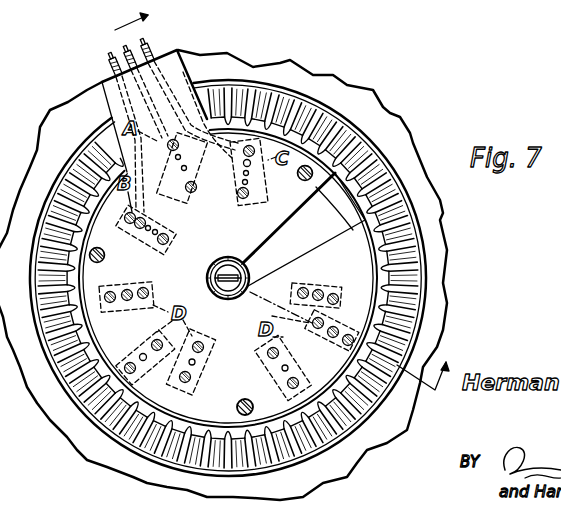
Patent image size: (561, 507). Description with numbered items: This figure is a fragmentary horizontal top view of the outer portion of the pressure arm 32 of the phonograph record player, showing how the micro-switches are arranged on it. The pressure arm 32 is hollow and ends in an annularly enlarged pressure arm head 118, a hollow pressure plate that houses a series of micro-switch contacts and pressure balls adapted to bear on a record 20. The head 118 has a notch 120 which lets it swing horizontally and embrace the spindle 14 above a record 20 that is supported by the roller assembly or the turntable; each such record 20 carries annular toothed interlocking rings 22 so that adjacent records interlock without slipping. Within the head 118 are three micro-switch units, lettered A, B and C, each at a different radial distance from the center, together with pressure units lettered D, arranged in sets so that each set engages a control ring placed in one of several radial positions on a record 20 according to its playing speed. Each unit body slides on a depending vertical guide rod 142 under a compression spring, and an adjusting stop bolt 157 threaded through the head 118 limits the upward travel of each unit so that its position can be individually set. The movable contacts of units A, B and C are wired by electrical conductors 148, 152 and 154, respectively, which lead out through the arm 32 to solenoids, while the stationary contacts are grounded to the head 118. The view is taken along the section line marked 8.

The section line 8- 8 is at (273, 215).
The spindle 14 is at (241, 263).
The record 20 is at (377, 117).
The annular toothed interlocking ring 22 is at (407, 227).
The pressure arm 32 is at (173, 78).
The pressure arm head 118 is at (363, 283).
The notch 120 is at (307, 253).
The guide rod 142 is at (143, 291).
The electrical conductor 148 is at (128, 44).
The electrical conductor 152 is at (115, 64).
The electrical conductor 154 is at (151, 43).
The adjusting stop bolt 157 is at (175, 159).